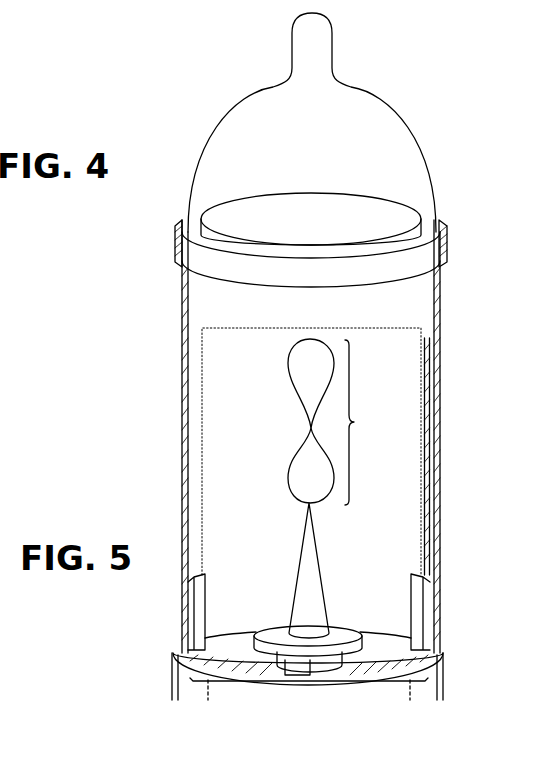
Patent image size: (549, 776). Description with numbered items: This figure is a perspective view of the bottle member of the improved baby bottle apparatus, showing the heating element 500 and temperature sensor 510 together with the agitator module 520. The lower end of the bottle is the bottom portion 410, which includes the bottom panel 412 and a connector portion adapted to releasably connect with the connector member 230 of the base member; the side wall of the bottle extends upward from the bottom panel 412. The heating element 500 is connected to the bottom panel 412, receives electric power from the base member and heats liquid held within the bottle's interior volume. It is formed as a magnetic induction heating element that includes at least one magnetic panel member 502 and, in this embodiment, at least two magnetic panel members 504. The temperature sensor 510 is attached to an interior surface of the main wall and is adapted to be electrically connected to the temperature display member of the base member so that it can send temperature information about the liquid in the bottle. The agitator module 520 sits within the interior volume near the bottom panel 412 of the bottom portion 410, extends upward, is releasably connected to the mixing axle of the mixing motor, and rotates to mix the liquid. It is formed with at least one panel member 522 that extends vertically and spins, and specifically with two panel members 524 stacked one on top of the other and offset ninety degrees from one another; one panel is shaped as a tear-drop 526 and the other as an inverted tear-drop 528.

In FIG. 4, the bottom portion 410 is at (0, 23).
In FIG. 4, the bottom panel 412 is at (0, 64).
In FIG. 5, the bottom panel 412 is at (185, 637).
In FIG. 4, the connector member 230 is at (16, 103).
In FIG. 5, the heating element 500 is at (174, 653).
In FIG. 5, the magnetic panel member 502 is at (310, 686).
In FIG. 5, the magnetic panel members 504 is at (393, 633).
In FIG. 5, the temperature sensor 510 is at (430, 358).
In FIG. 5, the agitator module 520 is at (312, 452).
In FIG. 5, the panel member 522 is at (298, 388).
In FIG. 5, the two panel members 524 is at (369, 422).
In FIG. 5, the tear-drop 526 is at (303, 477).
In FIG. 5, the inverted tear-drop 528 is at (300, 357).